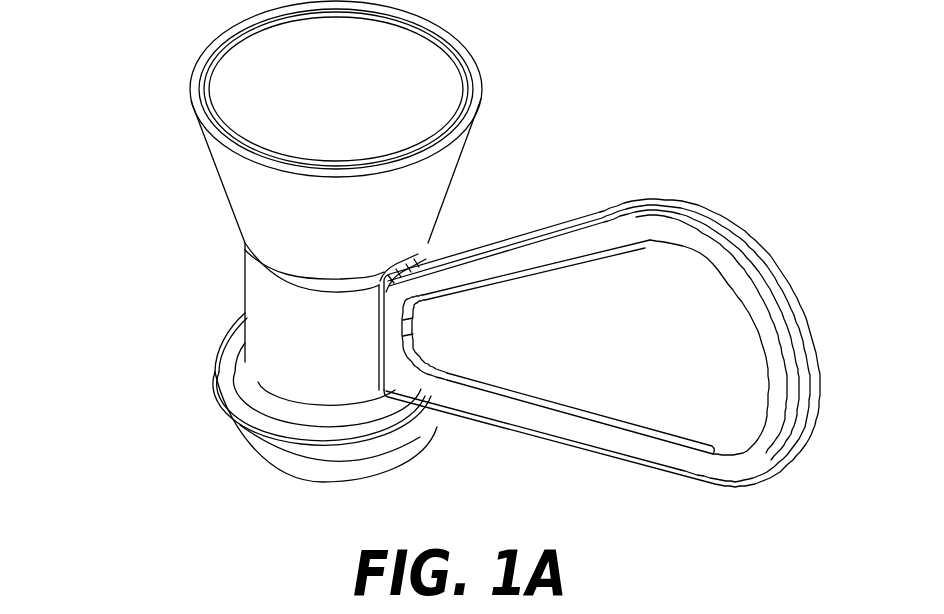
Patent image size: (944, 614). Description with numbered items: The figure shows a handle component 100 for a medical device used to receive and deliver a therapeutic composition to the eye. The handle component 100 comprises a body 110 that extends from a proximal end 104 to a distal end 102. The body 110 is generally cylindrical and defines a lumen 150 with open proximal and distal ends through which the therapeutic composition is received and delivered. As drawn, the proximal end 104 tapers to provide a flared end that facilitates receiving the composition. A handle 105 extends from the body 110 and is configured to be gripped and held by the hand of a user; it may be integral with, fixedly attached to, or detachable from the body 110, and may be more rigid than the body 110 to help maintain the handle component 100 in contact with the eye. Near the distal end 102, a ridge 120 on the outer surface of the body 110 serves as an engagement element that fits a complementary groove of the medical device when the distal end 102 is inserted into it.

The handle component 100 is at (108, 60).
The distal end 102 is at (411, 458).
The proximal end 104 is at (463, 53).
The handle 105 is at (735, 343).
The body 110 is at (262, 297).
The ridge 120 is at (248, 422).
The lumen 150 is at (316, 81).